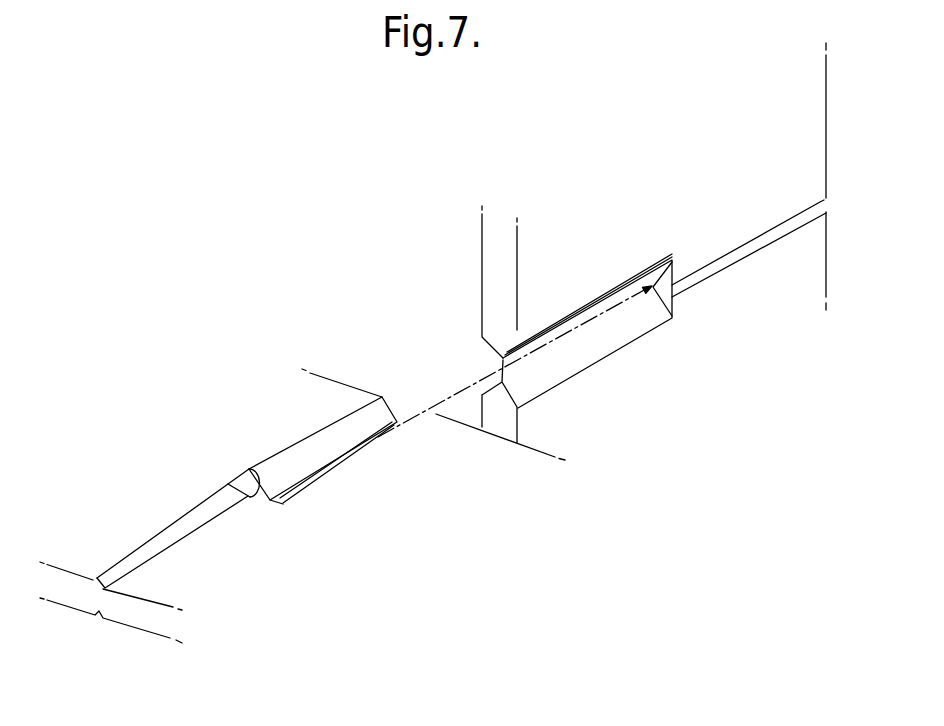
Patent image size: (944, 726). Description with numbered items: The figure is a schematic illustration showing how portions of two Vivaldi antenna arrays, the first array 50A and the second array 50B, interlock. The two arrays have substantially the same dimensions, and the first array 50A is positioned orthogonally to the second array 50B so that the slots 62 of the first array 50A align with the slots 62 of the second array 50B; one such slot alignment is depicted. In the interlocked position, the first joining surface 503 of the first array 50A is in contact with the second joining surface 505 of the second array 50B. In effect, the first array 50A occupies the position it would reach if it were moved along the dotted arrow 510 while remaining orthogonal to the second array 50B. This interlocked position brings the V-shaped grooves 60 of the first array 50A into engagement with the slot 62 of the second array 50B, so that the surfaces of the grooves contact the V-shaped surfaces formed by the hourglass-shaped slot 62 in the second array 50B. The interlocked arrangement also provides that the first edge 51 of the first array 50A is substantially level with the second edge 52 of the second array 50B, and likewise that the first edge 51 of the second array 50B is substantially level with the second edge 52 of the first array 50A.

The first array 50A is at (277, 424).
The second array 50B is at (717, 202).
The first edge 51 is at (151, 635).
The second edge 52 is at (345, 382).
The V-shaped grooves 60 is at (180, 530).
The slots 62 is at (386, 442).
The first joining surface 503 is at (249, 469).
The second joining surface 505 is at (651, 279).
The dotted arrow 510 is at (452, 397).